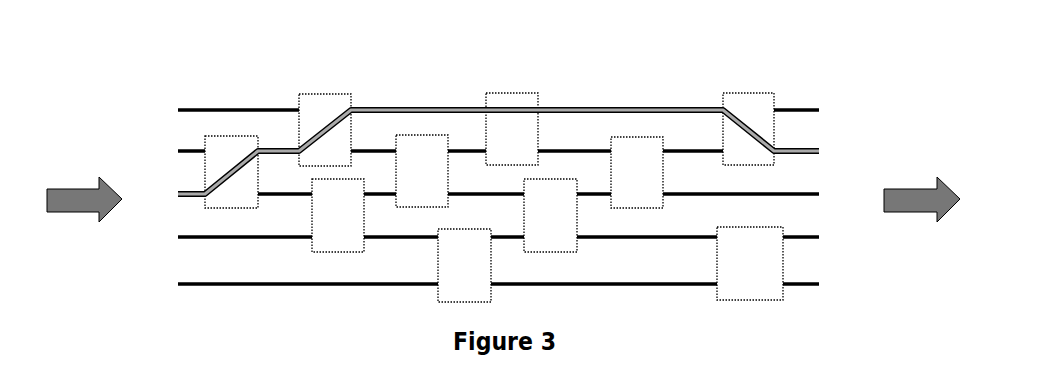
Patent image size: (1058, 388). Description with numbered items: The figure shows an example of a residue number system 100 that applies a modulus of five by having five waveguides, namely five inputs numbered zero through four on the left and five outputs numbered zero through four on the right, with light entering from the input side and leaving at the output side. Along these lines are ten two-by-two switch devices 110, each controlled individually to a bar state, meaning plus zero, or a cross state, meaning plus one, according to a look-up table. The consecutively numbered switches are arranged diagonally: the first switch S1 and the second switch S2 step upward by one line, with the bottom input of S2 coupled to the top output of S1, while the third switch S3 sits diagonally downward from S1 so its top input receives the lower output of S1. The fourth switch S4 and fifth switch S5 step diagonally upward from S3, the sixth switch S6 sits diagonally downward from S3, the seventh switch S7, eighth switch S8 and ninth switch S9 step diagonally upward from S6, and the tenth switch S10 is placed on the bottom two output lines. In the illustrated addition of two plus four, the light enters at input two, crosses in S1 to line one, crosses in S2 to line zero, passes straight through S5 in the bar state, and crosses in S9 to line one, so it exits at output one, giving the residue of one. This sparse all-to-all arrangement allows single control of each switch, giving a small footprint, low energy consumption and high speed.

The residue number system 100 is at (829, 65).
The switch devices 110 is at (316, 93).
The first switch S1 is at (231, 172).
The second switch S2 is at (325, 130).
The third switch S3 is at (338, 215).
The fourth switch S4 is at (422, 171).
The fifth switch S5 is at (512, 129).
The sixth switch S6 is at (464, 265).
The seventh switch S7 is at (550, 215).
The eighth switch S8 is at (637, 172).
The ninth switch S9 is at (748, 129).
The tenth switch S10 is at (750, 263).